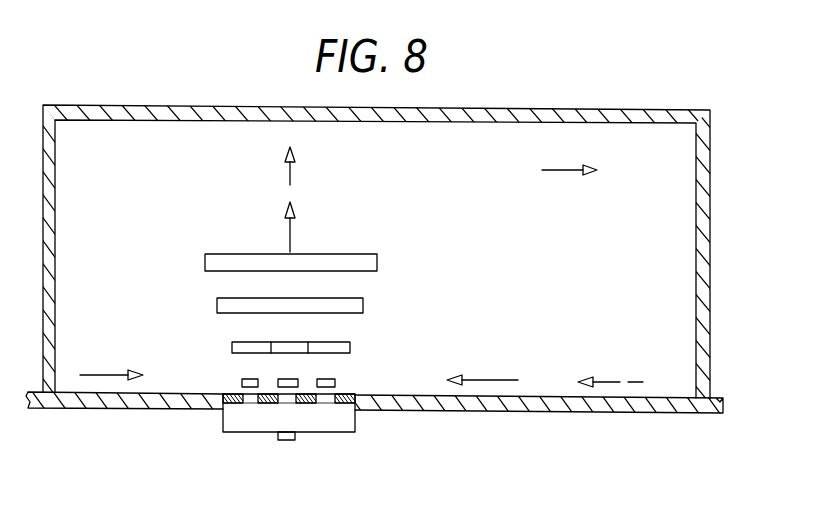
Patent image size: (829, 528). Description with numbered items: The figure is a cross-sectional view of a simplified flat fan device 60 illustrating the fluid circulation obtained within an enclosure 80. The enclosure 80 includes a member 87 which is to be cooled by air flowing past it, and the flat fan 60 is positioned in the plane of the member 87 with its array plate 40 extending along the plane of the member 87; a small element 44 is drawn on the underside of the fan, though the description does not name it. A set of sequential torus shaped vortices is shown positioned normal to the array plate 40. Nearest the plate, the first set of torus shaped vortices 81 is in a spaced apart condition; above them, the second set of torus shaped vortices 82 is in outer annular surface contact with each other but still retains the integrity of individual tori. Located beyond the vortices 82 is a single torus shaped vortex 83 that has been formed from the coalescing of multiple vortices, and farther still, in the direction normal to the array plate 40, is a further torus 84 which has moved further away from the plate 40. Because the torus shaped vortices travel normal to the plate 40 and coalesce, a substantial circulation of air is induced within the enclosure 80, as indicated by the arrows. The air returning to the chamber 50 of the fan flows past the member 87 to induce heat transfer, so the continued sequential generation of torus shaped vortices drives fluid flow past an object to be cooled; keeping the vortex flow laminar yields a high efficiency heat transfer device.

The array plate 40 is at (345, 403).
The electrical connector 44 is at (290, 440).
The chamber 50 is at (281, 418).
The flat fan device 60 is at (215, 447).
The enclosure 80 is at (535, 91).
The first set of torus shaped vortices 81 is at (333, 379).
The second set of torus shaped vortices 82 is at (338, 343).
The single torus shaped vortex 83 is at (355, 298).
The further torus 84 is at (366, 254).
The member 87 is at (523, 413).